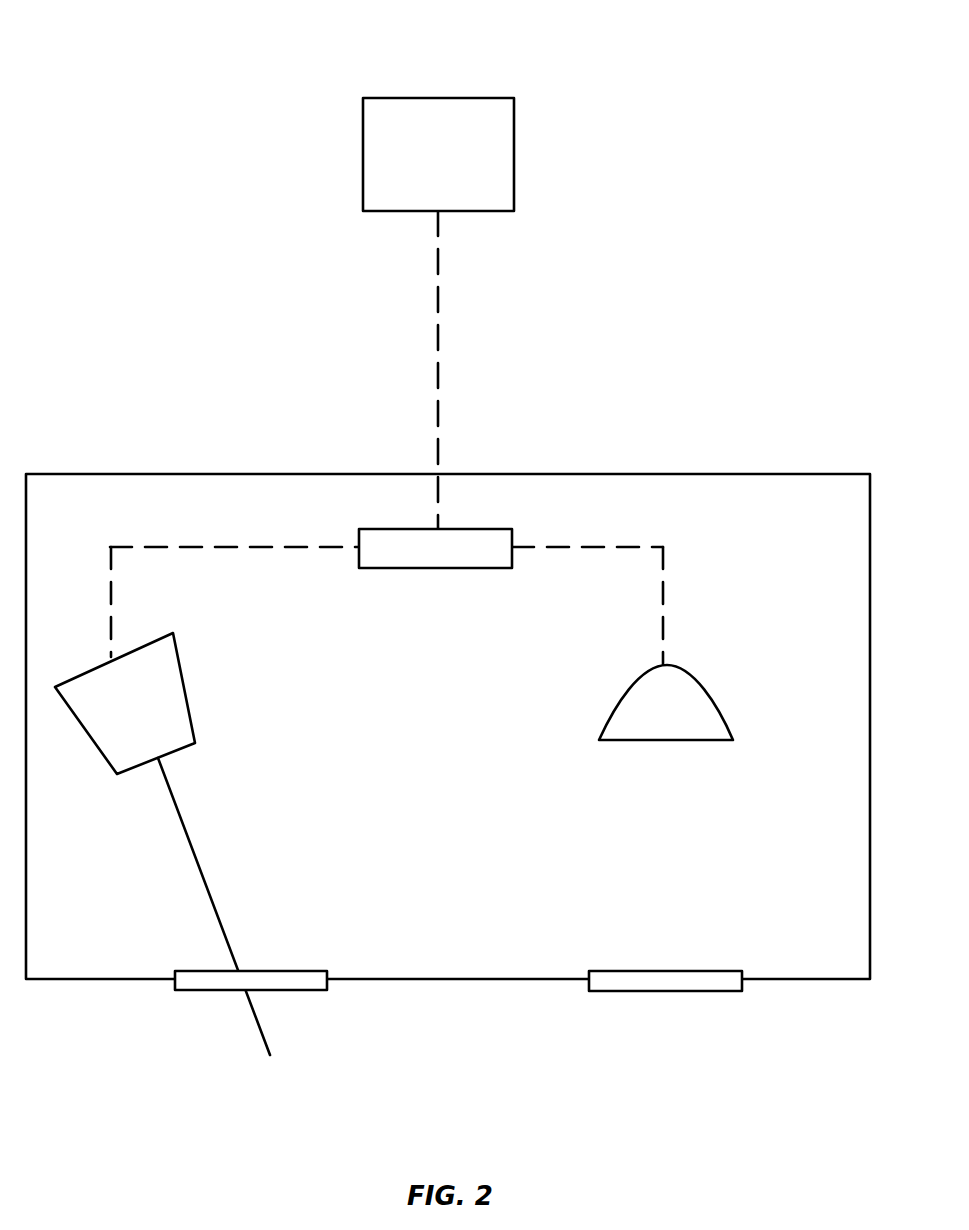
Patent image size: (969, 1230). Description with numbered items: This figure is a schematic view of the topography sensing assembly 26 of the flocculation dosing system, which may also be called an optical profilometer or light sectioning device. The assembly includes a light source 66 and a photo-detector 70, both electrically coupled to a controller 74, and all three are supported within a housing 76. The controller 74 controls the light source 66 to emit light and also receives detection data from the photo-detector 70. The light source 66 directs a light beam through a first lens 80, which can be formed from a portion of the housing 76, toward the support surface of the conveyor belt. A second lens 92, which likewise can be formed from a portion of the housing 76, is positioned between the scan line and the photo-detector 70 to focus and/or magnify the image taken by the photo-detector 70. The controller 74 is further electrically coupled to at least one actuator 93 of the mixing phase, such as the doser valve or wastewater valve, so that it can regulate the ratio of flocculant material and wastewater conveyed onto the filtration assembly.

The topography sensing assembly 26 is at (758, 280).
The light source 66 is at (183, 685).
The photo-detector 70 is at (712, 692).
The controller 74 is at (449, 568).
The housing 76 is at (180, 474).
The first lens 80 is at (202, 990).
The second lens 92 is at (675, 991).
The actuator 93 is at (440, 98).